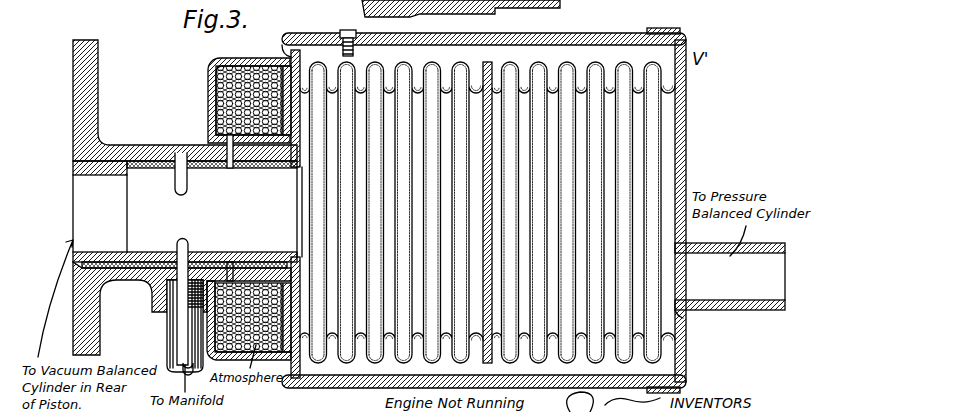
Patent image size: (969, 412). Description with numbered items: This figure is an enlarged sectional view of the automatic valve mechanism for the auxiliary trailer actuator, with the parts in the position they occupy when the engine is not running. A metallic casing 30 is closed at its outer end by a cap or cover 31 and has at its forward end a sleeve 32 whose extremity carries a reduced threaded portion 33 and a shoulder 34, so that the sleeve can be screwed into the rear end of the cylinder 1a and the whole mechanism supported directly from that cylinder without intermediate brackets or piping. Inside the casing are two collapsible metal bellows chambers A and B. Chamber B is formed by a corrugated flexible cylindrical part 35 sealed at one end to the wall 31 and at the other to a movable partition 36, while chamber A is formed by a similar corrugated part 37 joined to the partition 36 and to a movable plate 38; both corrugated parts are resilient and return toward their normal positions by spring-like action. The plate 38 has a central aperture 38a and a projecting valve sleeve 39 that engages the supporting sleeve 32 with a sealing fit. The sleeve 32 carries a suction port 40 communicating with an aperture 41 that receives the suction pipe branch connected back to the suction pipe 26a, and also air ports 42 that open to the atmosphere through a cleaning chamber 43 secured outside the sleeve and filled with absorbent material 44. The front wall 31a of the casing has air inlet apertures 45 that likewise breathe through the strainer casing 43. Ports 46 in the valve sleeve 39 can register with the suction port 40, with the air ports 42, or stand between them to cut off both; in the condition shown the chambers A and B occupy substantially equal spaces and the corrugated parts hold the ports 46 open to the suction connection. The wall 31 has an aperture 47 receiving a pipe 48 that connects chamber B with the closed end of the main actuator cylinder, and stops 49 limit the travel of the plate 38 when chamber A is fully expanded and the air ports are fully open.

The cylinder 1a is at (73, 72).
The casing 30 is at (586, 44).
The cap or cover 31 is at (686, 130).
The front wall 31a is at (282, 58).
The sleeve 32 is at (168, 146).
The reduced threaded portion 33 is at (78, 163).
The shoulder 34 is at (122, 146).
The corrugated flexible cylindrical part 35 is at (578, 352).
The movable partition 36 is at (488, 352).
The corrugated part 37 is at (380, 356).
The movable plate 38 is at (312, 388).
The central aperture 38a is at (301, 210).
The valve sleeve 39 is at (214, 254).
The suction port 40 is at (176, 270).
The aperture 41 is at (166, 302).
The air ports 42 is at (230, 168).
The cleaning chamber 43 is at (214, 73).
The absorbent material 44 is at (255, 62).
The air inlet apertures 45 is at (280, 102).
The ports 46 is at (182, 238).
The aperture 47 is at (680, 312).
The pipe 48 is at (770, 310).
The stops 49 is at (348, 30).
The suction pipe 26a is at (170, 345).
The chamber A is at (378, 115).
The chamber B is at (568, 108).